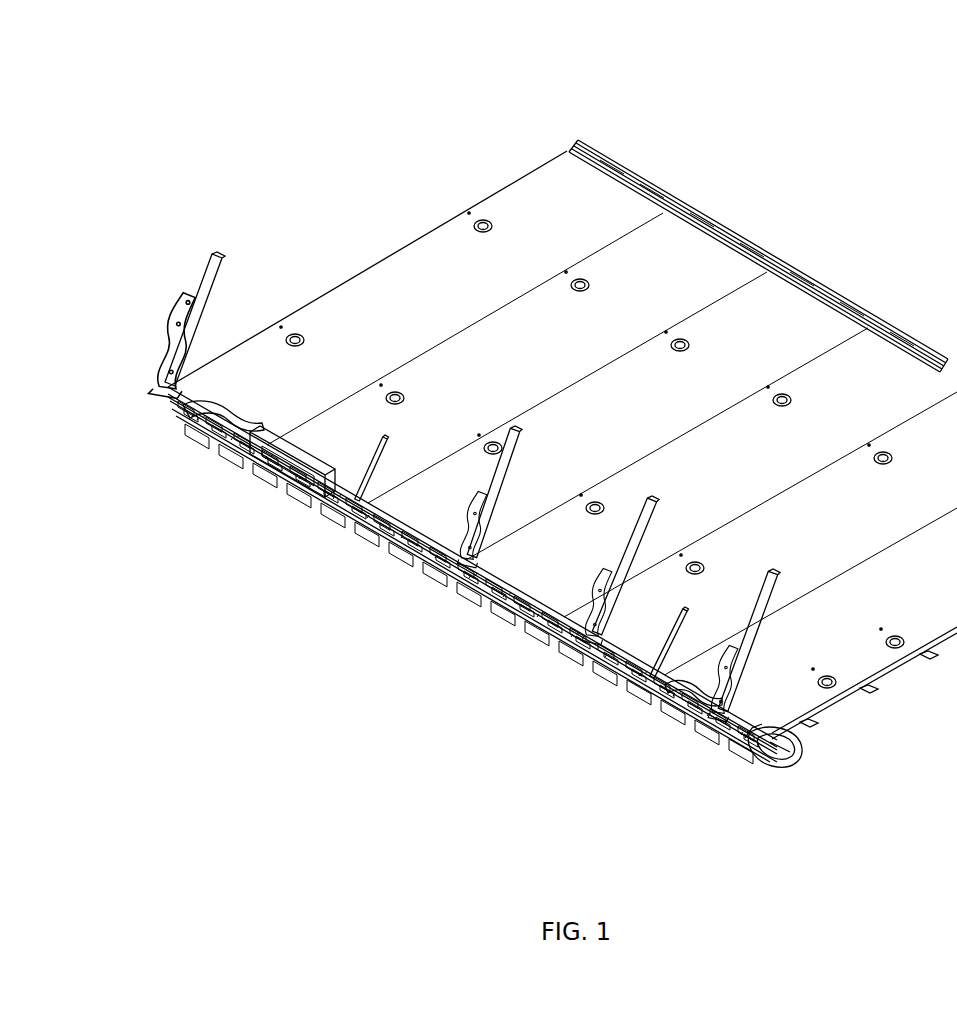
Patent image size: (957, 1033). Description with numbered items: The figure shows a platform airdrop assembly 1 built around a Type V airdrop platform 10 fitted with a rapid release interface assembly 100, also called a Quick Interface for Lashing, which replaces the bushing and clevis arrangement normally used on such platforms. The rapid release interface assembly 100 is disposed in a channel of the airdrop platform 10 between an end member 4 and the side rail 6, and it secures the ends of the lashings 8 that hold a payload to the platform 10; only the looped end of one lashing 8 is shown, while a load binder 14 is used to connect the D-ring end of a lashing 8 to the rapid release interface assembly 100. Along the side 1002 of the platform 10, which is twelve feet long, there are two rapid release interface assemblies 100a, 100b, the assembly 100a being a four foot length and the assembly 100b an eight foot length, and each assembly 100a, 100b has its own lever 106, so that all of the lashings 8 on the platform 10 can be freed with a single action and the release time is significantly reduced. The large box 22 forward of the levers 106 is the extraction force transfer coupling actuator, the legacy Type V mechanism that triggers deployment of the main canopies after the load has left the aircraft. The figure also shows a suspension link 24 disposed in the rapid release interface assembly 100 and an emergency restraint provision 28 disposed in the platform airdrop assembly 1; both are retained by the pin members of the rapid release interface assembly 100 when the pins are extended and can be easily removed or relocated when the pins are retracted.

The platform airdrop assembly 1 is at (388, 140).
The end member 4 is at (570, 148).
The side rail 6 is at (585, 143).
The lashing 8 is at (211, 267).
The airdrop platform 10 is at (773, 308).
The load binder 14 is at (162, 343).
The extraction force transfer coupling actuator 22 is at (262, 440).
The suspension link 24 is at (215, 411).
The emergency restraint provision 28 is at (802, 748).
The rapid release interface assembly 100 is at (490, 587).
The rapid release interface assembly 100a is at (627, 710).
The rapid release interface assembly 100b is at (325, 540).
The lever 106 is at (372, 462).
The side 1002 is at (437, 720).